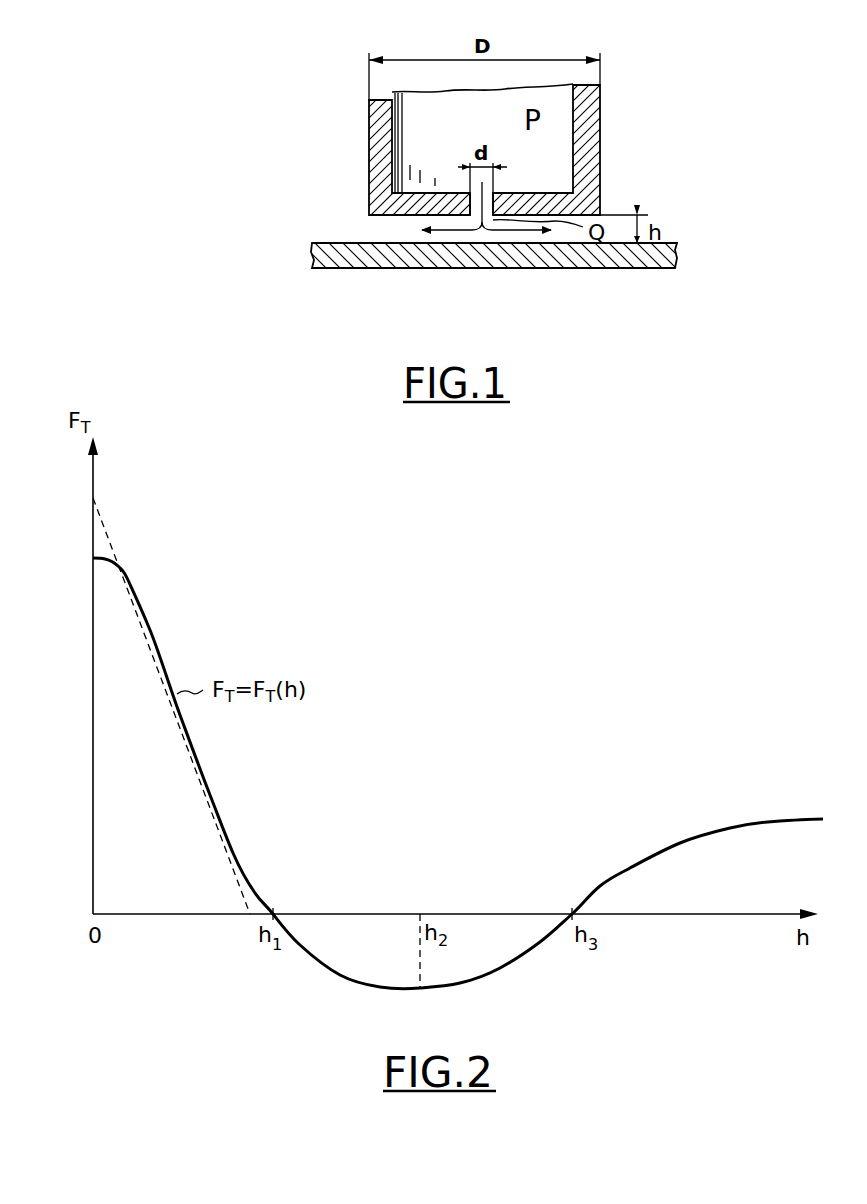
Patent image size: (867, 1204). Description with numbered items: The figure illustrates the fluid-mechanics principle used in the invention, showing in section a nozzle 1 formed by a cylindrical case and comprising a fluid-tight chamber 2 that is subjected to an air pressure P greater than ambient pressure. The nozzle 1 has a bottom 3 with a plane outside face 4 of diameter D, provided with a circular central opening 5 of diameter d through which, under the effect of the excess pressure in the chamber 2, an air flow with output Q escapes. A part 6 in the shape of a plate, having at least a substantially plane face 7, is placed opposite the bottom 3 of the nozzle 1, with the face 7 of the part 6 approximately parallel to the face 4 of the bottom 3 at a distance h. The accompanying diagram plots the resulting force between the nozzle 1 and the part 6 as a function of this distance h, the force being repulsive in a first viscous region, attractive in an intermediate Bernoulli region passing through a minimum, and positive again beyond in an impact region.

The nozzle 1 is at (350, 144).
The fluid-tight chamber 2 is at (446, 141).
The bottom 3 is at (553, 193).
The plane outside face 4 is at (388, 222).
The circular central opening 5 is at (489, 192).
The part 6 is at (387, 270).
The plane face 7 is at (337, 243).